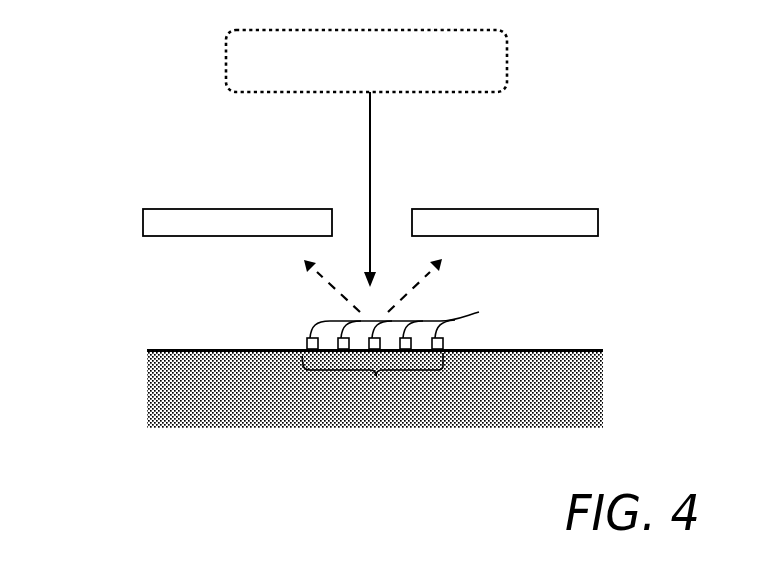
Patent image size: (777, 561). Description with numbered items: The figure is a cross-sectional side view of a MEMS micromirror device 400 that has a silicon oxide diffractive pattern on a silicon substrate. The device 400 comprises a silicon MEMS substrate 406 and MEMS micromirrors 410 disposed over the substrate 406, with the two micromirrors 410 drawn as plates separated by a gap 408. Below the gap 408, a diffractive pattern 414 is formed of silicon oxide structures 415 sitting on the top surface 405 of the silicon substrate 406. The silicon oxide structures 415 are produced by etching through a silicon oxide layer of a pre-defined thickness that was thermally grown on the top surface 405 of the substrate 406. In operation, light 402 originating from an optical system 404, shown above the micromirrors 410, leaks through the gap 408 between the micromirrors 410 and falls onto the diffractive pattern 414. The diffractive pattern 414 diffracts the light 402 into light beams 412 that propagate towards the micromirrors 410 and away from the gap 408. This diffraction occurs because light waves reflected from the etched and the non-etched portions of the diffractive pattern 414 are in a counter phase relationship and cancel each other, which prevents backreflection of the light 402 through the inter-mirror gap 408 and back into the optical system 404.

The MEMS micromirror device 400 is at (140, 86).
The light 402 is at (369, 170).
The optical system 404 is at (388, 74).
The top surface 405 is at (574, 336).
The silicon MEMS substrate 406 is at (550, 407).
The gap 408 is at (392, 179).
The MEMS micromirrors 410 is at (189, 208).
The light beams 412 is at (330, 286).
The diffractive pattern 414 is at (376, 376).
The silicon oxide structures 415 is at (418, 316).